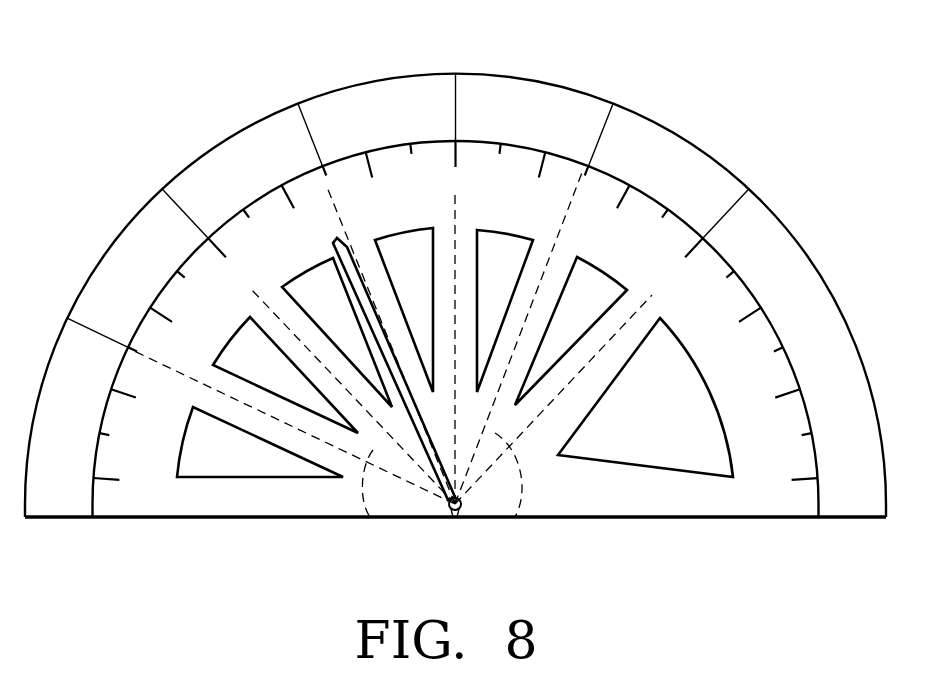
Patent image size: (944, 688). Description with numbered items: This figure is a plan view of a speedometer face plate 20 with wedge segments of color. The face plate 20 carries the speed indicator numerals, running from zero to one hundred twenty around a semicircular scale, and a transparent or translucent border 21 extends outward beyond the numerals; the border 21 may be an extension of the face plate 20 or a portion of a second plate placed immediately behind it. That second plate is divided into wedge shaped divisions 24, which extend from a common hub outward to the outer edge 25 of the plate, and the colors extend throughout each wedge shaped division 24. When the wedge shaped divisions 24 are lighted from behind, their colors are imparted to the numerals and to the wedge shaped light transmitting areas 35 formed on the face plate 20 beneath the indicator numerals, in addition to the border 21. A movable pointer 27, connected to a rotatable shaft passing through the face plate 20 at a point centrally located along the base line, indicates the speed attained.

The face plate 20 is at (600, 492).
The border 21 is at (787, 267).
The wedge shaped divisions 24 is at (374, 456).
The outer edge 25 is at (530, 76).
The pointer 27 is at (403, 450).
The wedge shaped light transmitting areas 35 is at (268, 443).